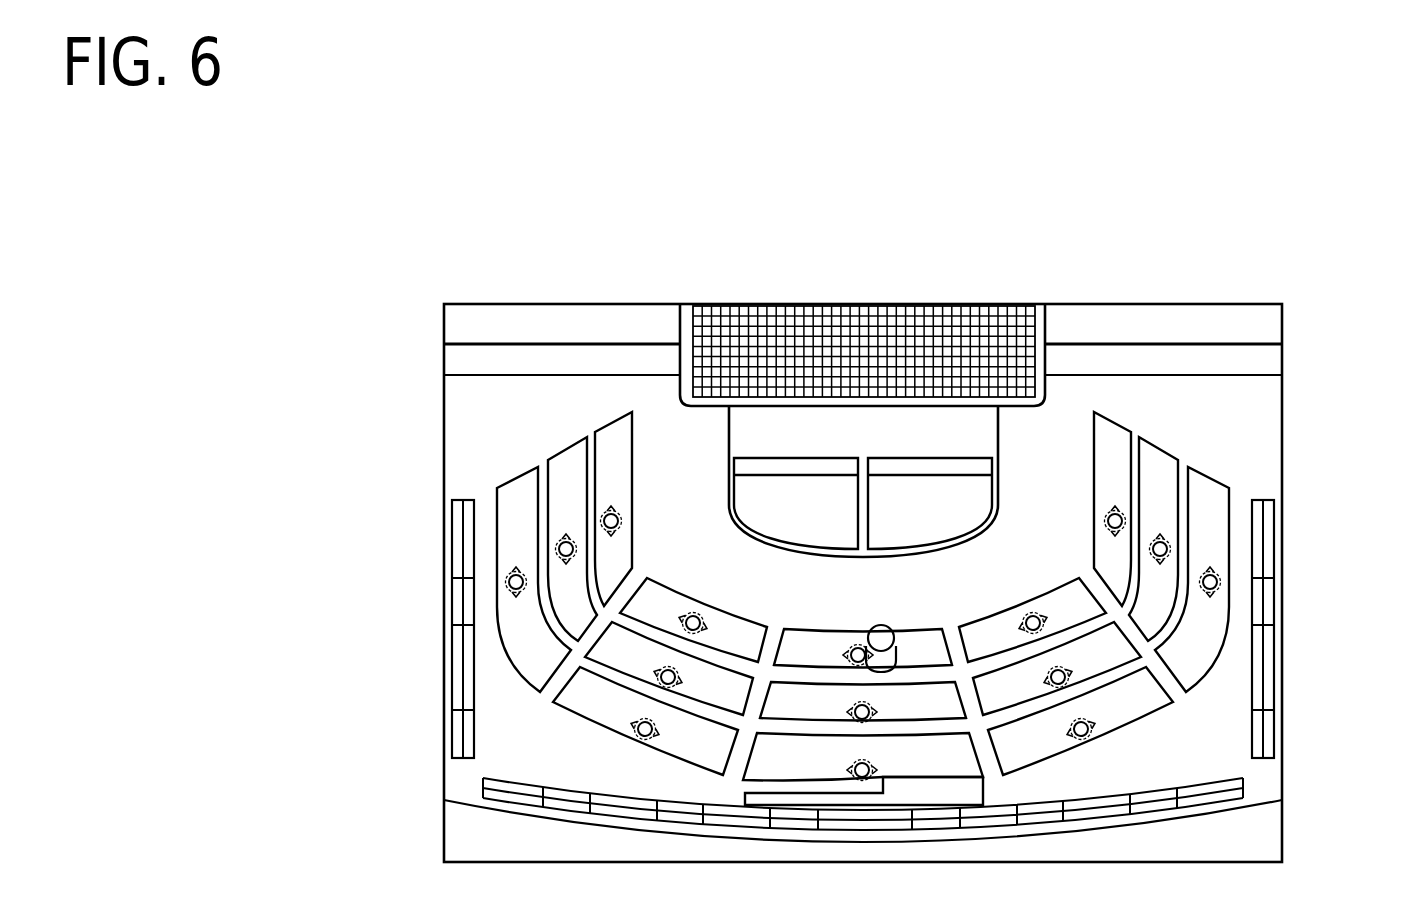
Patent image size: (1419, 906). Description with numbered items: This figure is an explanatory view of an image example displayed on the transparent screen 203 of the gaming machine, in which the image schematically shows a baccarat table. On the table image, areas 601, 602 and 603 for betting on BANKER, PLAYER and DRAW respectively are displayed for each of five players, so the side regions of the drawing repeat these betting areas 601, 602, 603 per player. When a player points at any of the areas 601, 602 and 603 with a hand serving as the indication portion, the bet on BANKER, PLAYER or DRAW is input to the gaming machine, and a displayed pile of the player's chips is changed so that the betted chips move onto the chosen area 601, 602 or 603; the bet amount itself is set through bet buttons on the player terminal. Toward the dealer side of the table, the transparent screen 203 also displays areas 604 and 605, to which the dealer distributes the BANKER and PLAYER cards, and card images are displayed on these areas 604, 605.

The transparent screen 203 is at (1283, 448).
The area to bet for BANKER 601 is at (618, 421).
The area to bet for PLAYER 602 is at (572, 446).
The area to bet for DRAW 603 is at (515, 479).
The area to which the dealer distributes cards 604 is at (782, 545).
The area to which the dealer distributes cards 605 is at (927, 545).